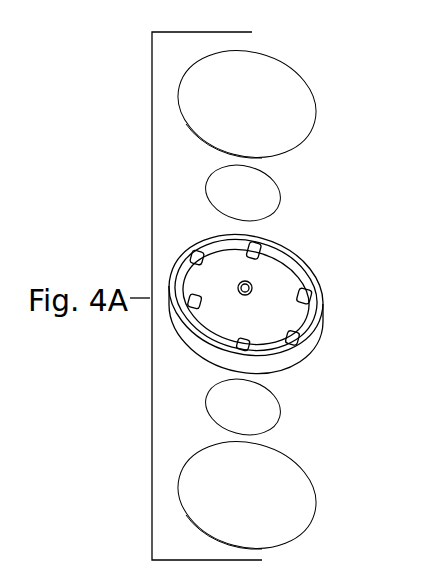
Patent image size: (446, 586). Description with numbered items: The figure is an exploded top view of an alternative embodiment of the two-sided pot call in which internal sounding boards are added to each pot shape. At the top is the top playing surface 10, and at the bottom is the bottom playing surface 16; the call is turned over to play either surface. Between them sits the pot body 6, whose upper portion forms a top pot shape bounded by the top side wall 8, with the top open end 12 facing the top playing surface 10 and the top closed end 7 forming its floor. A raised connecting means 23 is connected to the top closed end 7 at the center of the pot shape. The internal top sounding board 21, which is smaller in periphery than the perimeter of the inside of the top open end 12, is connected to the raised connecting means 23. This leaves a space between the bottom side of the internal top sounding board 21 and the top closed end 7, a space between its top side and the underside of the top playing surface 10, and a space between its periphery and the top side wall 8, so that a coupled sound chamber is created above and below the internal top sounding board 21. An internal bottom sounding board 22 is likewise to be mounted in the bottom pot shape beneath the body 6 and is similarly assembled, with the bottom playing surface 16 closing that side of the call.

The top playing surface 10 is at (263, 102).
The internal top sounding board 21 is at (250, 197).
The top open end 12 is at (213, 240).
The top side wall 8 is at (258, 250).
The raised connecting means 23 is at (251, 285).
The housing 6 is at (300, 347).
The top closed end 7 is at (232, 313).
The internal bottom sounding board 22 is at (255, 410).
The bottom playing surface 16 is at (257, 490).